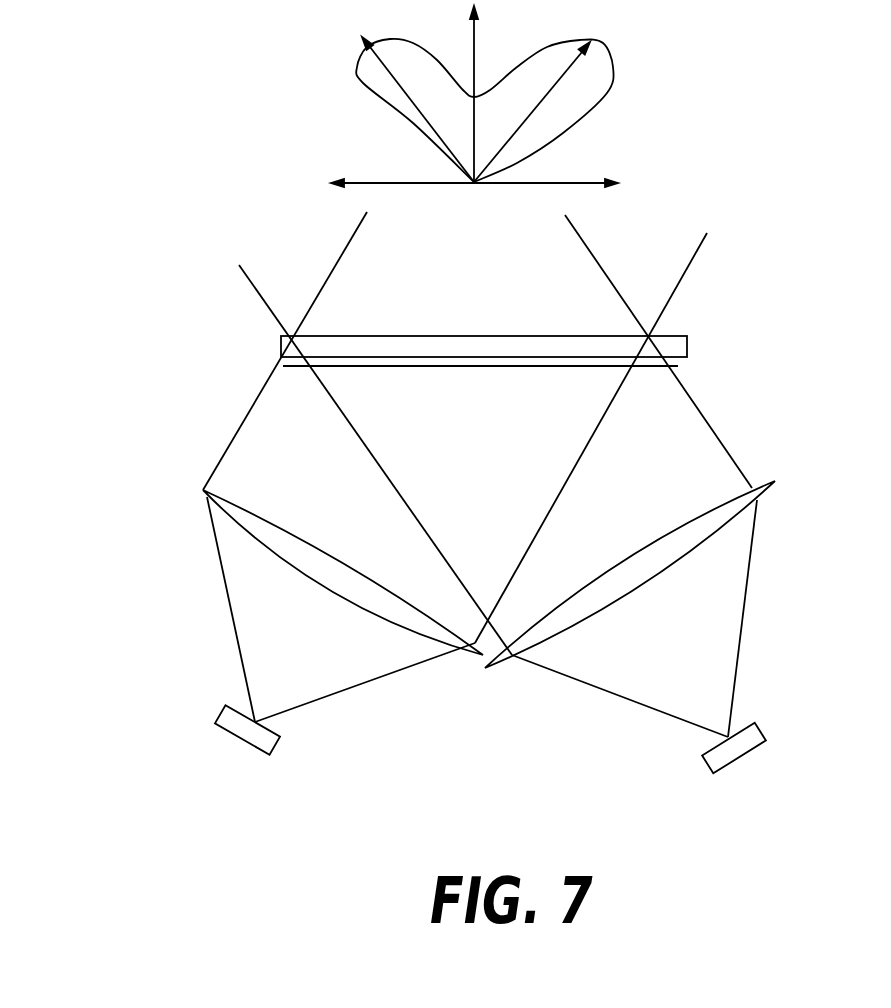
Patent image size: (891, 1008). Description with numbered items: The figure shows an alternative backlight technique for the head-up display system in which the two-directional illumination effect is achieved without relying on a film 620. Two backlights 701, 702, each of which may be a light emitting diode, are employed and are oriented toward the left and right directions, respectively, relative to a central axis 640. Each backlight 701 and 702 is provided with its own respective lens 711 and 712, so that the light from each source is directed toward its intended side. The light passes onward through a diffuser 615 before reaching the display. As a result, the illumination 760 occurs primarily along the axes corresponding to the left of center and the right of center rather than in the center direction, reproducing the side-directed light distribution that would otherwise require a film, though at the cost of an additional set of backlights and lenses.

The illumination 760 is at (533, 123).
The axis 640 is at (420, 184).
The film 620 is at (687, 342).
The diffuser 615 is at (704, 375).
The lens 711 is at (287, 527).
The lens 712 is at (710, 535).
The backlight 701 is at (237, 737).
The backlight 702 is at (747, 753).